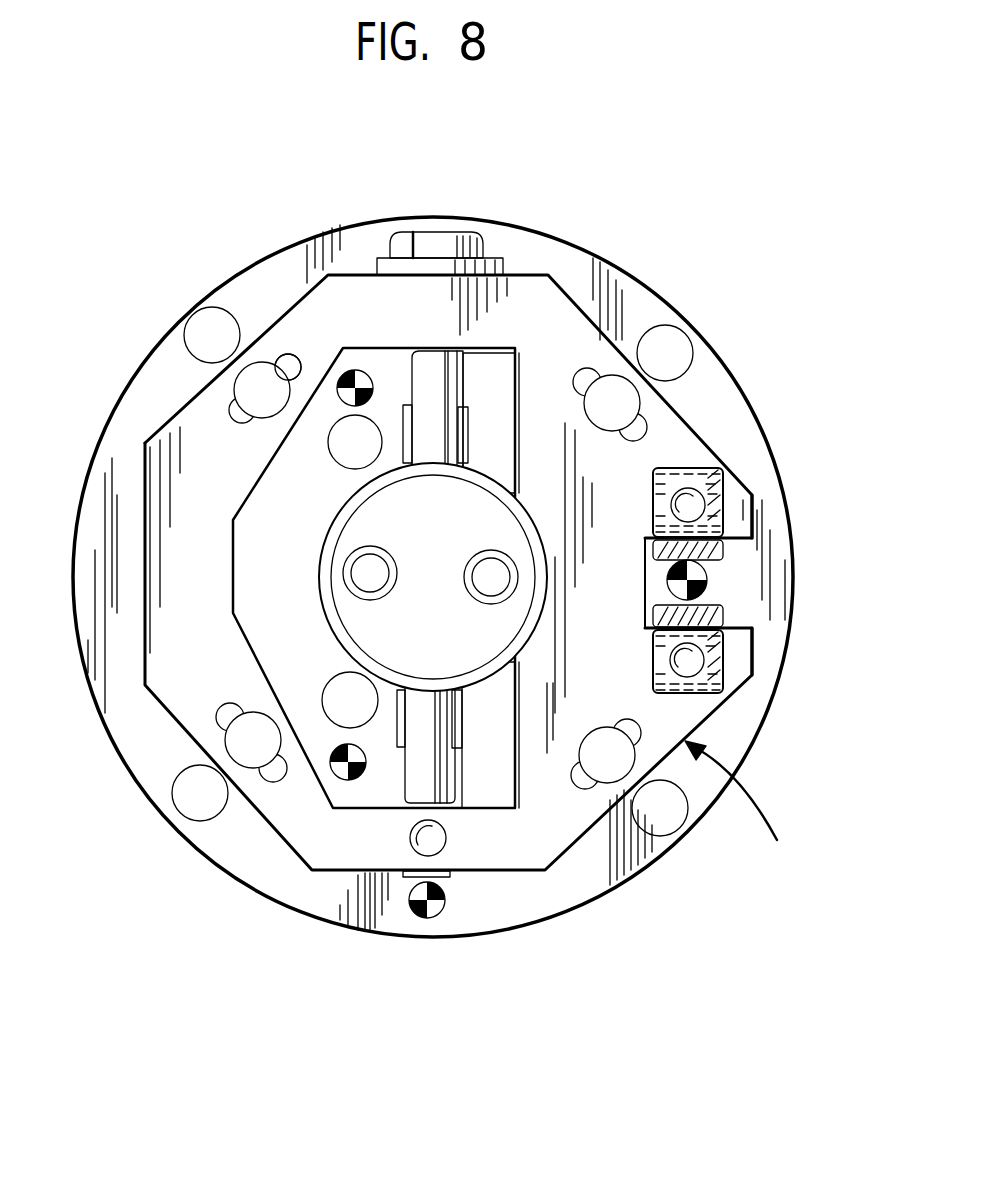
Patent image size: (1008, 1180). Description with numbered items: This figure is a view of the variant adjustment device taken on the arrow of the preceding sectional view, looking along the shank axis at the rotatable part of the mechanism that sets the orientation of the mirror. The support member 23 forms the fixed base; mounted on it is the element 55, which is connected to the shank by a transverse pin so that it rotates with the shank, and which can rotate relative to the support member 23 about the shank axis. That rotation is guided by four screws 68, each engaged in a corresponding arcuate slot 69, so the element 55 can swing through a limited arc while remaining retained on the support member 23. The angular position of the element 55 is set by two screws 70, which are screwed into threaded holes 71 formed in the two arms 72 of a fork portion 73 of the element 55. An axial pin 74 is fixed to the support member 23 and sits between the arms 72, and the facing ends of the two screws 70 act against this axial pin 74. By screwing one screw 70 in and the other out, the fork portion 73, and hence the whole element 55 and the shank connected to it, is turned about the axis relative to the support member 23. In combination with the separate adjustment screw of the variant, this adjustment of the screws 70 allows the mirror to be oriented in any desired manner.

The support member 23 is at (511, 912).
The element 55 is at (323, 843).
The screws 68 is at (250, 392).
The arcuate slots 69 is at (283, 358).
The screws 70 is at (725, 525).
The threaded holes 71 is at (703, 463).
The arms 72 is at (745, 500).
The fork portion 73 is at (743, 807).
The axial pin 74 is at (707, 570).